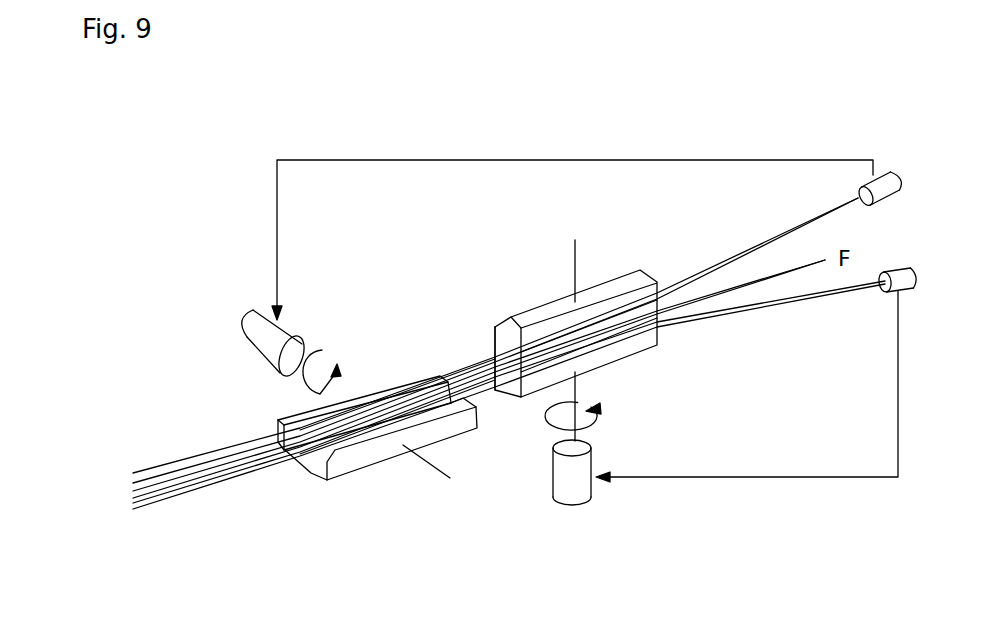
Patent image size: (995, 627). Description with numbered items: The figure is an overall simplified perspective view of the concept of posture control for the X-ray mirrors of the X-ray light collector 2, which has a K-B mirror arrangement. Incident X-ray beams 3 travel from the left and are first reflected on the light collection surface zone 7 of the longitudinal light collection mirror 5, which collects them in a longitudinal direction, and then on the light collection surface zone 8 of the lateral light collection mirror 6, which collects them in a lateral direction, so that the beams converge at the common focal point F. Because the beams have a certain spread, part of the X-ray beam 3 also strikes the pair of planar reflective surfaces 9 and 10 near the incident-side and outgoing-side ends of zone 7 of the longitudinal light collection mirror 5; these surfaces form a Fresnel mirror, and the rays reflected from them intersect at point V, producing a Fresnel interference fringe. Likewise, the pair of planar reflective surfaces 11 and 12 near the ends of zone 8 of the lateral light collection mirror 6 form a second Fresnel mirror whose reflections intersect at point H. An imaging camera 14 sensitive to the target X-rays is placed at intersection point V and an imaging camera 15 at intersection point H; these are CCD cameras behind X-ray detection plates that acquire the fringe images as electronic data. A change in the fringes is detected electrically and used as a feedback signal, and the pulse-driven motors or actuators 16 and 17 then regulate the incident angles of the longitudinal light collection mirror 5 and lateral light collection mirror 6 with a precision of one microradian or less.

The X-ray light collector 2 is at (427, 318).
The incident X-ray beams 3 is at (205, 447).
The longitudinal light collection mirror 5 is at (387, 460).
The lateral light collection mirror 6 is at (551, 296).
The light collection surface zone 7 is at (413, 375).
The light collection surface zone 8 is at (631, 298).
The planar reflective surface 9 is at (341, 465).
The planar reflective surface 10 is at (478, 410).
The planar reflective surface 11 is at (493, 317).
The planar reflective surface 12 is at (658, 298).
The imaging camera 14 is at (891, 171).
The imaging camera 15 is at (912, 270).
The pulse-driven motor or actuator 16 is at (252, 333).
The pulse-driven motor or actuator 17 is at (571, 491).